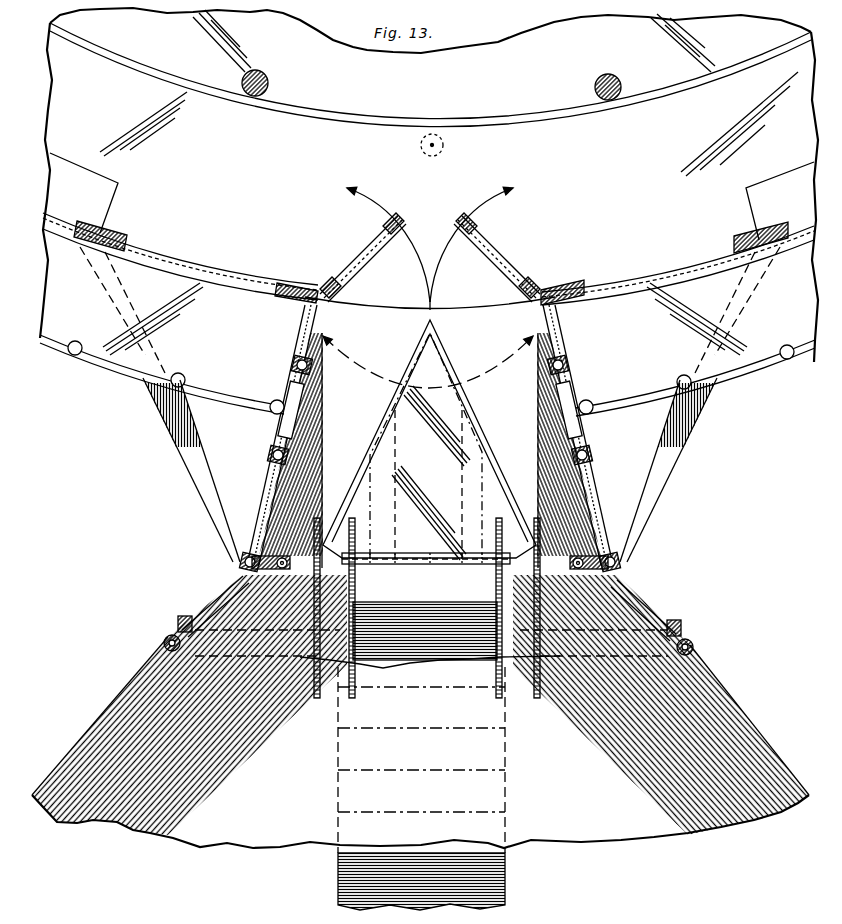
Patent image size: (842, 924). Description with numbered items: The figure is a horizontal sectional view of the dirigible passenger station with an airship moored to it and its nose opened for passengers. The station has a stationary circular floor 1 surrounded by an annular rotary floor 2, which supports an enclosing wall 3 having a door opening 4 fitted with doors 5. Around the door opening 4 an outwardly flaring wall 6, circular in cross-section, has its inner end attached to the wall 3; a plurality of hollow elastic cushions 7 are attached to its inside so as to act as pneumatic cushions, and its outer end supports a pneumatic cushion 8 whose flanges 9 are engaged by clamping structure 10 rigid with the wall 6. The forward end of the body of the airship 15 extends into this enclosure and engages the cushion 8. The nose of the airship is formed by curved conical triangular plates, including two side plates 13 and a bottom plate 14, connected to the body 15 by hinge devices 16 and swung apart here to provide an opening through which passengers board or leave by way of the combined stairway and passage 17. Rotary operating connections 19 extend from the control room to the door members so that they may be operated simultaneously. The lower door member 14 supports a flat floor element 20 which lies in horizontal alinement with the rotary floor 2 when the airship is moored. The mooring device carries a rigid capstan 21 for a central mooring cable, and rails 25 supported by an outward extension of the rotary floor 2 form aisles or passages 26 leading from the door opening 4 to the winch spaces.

The stationary circular floor 1 is at (337, 100).
The annular rotary floor 2 is at (553, 136).
The enclosing wall 3 is at (224, 275).
The door opening 4 is at (400, 308).
The doors 5 is at (366, 250).
The outwardly flaring wall 6 is at (282, 419).
The elastic cushions 7 is at (303, 377).
The pneumatic cushion 8 is at (165, 650).
The flanges 9 is at (182, 624).
The clamping structure 10 is at (289, 564).
The side plates 13 is at (280, 490).
The bottom plate 14 is at (450, 420).
The body of the airship 15 is at (618, 830).
The hinge devices 16 is at (428, 556).
The combined stairway and passage 17 is at (348, 876).
The rotary operating connections 19 is at (350, 622).
The flat wall or floor element 20 is at (416, 446).
The rigid capstan 21 is at (444, 146).
The rails 25 is at (113, 362).
The aisles or passages 26 is at (143, 360).